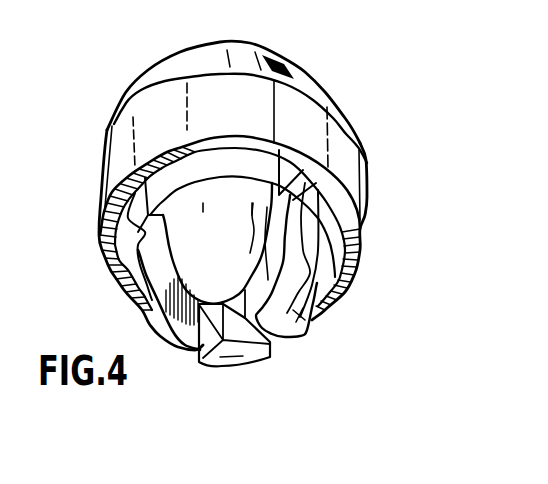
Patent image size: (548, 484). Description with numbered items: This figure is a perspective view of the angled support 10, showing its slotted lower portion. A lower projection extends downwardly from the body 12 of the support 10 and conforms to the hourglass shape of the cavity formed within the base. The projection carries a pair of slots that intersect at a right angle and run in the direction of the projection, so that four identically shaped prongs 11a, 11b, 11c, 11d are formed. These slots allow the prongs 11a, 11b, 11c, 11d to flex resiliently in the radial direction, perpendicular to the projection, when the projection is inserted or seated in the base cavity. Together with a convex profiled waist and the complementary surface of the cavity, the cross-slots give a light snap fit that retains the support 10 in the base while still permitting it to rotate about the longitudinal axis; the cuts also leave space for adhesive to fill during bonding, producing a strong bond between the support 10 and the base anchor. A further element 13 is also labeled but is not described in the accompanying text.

The support 10 is at (320, 72).
The prong 11a is at (303, 310).
The prong 11b is at (236, 360).
The prong 11c is at (174, 320).
The prong 11d is at (218, 233).
The body 12 is at (340, 153).
The top closure 13 is at (180, 62).